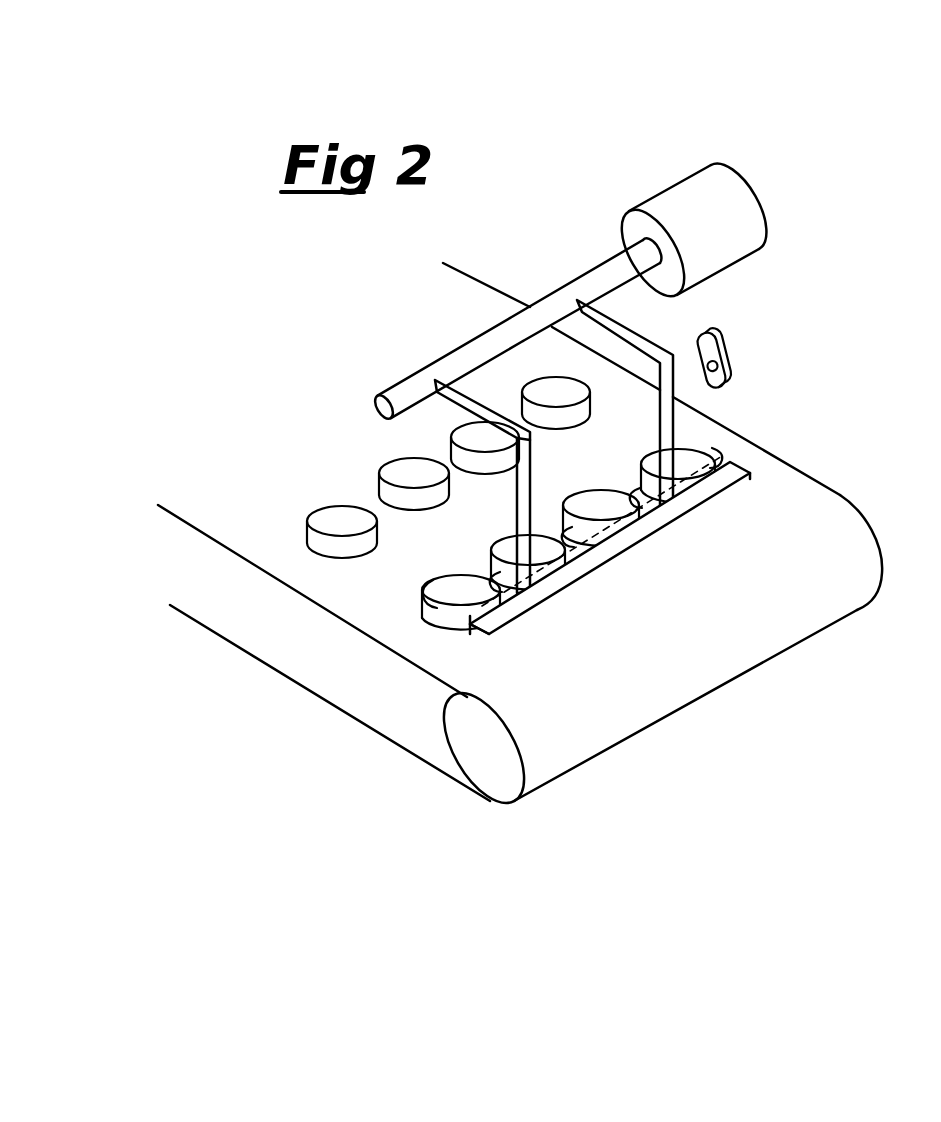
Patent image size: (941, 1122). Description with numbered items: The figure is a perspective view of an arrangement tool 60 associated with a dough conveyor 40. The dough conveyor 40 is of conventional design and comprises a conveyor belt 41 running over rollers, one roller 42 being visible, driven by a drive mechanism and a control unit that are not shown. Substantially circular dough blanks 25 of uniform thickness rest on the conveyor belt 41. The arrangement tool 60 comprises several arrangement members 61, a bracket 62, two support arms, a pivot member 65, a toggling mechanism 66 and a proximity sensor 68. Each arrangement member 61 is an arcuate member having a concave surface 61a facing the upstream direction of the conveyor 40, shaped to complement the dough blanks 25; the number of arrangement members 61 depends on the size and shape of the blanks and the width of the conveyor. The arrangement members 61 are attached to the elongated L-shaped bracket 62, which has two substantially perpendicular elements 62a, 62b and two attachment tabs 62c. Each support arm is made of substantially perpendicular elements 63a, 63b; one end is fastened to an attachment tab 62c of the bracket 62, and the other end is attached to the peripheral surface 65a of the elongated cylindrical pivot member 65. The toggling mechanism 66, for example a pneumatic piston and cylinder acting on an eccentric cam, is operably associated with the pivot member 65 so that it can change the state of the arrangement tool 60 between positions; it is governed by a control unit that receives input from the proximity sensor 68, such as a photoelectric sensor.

The dough blanks 25 is at (333, 512).
The dough conveyor 40 is at (520, 557).
The conveyor belt 41 is at (250, 515).
The roller 42 is at (497, 800).
The arrangement tool 60 is at (440, 316).
The arrangement member 61 is at (575, 548).
The concave surface 61a is at (437, 590).
The bracket 62 is at (610, 568).
The bracket element 62a is at (474, 633).
The bracket element 62b is at (595, 560).
The attachment tab 62c is at (657, 512).
The support arm element 63a is at (452, 410).
The support arm element 63b is at (516, 506).
The pivot member 65 is at (542, 294).
The peripheral surface 65a is at (448, 352).
The toggling mechanism 66 is at (670, 196).
The proximity sensor 68 is at (726, 334).